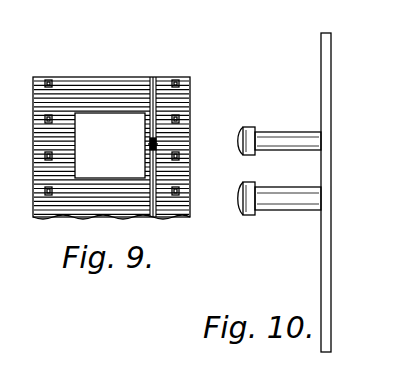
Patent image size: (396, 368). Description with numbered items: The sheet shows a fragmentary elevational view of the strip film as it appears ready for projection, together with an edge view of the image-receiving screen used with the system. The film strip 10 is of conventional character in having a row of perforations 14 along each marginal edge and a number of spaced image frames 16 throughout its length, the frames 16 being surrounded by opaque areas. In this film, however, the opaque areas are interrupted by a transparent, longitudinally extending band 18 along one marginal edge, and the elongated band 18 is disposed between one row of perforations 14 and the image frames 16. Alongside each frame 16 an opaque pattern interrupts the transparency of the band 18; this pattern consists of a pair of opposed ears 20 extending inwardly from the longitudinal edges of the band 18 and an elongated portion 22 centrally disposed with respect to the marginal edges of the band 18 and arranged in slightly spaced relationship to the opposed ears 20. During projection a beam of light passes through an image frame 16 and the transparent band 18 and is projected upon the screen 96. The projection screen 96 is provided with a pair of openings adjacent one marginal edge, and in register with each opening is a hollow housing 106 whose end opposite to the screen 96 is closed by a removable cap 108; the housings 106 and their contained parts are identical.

In FIG. 9, the film strip 10 is at (87, 90).
In FIG. 9, the perforations 14 is at (63, 78).
In FIG. 9, the image frames 16 is at (112, 113).
In FIG. 9, the transparent band 18 is at (153, 90).
In FIG. 9, the opposed ears 20 is at (146, 140).
In FIG. 9, the elongated portion 22 is at (158, 145).
In FIG. 10, the screen 96 is at (326, 160).
In FIG. 10, the hollow housing 106 is at (283, 133).
In FIG. 10, the removable cap 108 is at (246, 160).